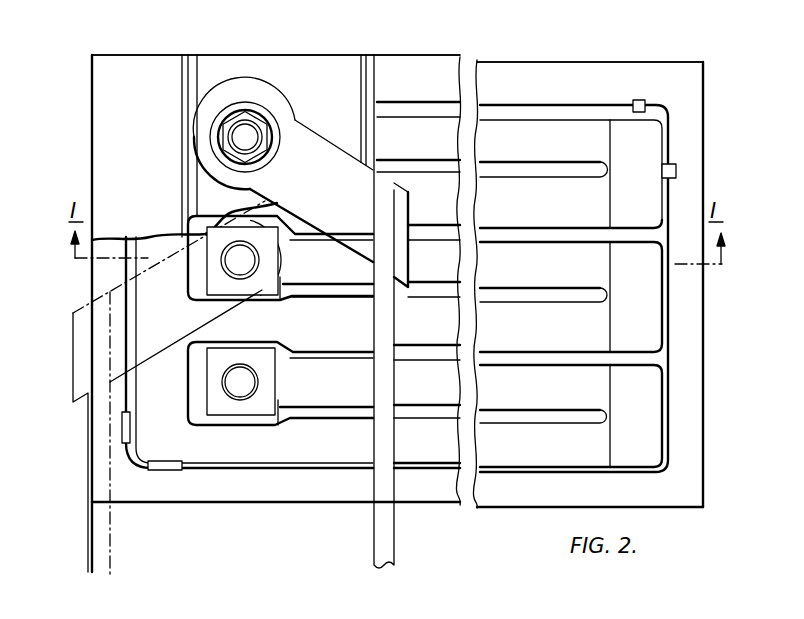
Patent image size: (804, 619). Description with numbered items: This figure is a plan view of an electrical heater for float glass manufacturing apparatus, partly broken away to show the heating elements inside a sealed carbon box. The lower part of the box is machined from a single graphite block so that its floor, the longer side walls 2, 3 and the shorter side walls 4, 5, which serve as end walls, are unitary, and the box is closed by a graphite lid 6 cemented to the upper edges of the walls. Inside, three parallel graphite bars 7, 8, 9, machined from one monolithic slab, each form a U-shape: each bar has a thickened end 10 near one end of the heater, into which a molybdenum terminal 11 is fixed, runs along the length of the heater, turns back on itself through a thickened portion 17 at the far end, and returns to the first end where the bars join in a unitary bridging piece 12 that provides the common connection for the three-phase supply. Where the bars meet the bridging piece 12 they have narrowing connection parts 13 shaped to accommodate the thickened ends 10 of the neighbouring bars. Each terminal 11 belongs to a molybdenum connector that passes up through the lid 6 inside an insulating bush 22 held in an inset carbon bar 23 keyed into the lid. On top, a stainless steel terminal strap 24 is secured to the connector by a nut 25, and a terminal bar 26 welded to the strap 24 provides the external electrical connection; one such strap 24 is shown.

The longer side wall 2 is at (578, 80).
The longer side wall 3 is at (443, 493).
The shorter side wall 4 is at (105, 277).
The shorter side wall 5 is at (690, 278).
The lid 6 is at (310, 63).
The graphite bar 7 is at (543, 135).
The graphite bar 8 is at (532, 332).
The graphite bar 9 is at (557, 450).
The thickened end 10 is at (258, 407).
The molybdenum terminal 11 is at (245, 137).
The bridging piece 12 is at (146, 422).
The narrowing connection part 13 is at (248, 328).
The thickened portion 17 is at (648, 188).
The insulating bush 22 is at (237, 93).
The inset carbon bar 23 is at (259, 68).
The terminal strap 24 is at (318, 160).
The stainless steel nut 25 is at (227, 138).
The terminal bar 26 is at (383, 535).